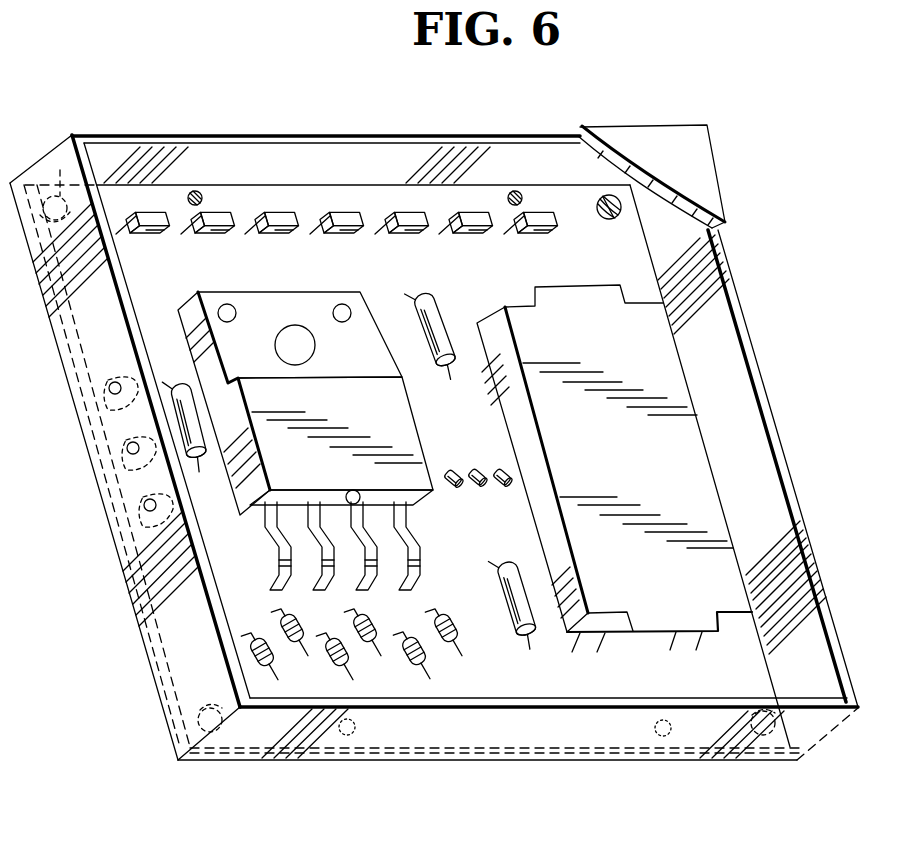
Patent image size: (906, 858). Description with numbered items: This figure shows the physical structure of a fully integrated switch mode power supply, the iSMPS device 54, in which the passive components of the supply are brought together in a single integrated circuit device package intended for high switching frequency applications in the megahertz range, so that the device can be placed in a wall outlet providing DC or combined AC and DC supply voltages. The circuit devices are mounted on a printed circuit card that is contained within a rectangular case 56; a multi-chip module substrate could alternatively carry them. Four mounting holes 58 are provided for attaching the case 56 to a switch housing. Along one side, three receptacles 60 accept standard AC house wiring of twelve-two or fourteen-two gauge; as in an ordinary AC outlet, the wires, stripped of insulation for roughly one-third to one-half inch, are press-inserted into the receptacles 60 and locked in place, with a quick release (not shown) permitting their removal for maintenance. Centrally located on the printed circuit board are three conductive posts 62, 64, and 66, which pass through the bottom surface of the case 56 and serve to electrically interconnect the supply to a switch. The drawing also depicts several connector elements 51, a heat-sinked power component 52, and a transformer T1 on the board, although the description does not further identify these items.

The connector terminals / screws 51 is at (193, 190).
The power semiconductor device 52 is at (287, 305).
The integrated SMPS device 54 is at (740, 136).
The rectangular case 56 is at (298, 132).
The mounting holes 58 is at (58, 170).
The receptacles 60 is at (110, 386).
The conductive post 62 is at (513, 468).
The conductive post 64 is at (482, 468).
The conductive post 66 is at (447, 488).
The transformer T1 is at (693, 473).